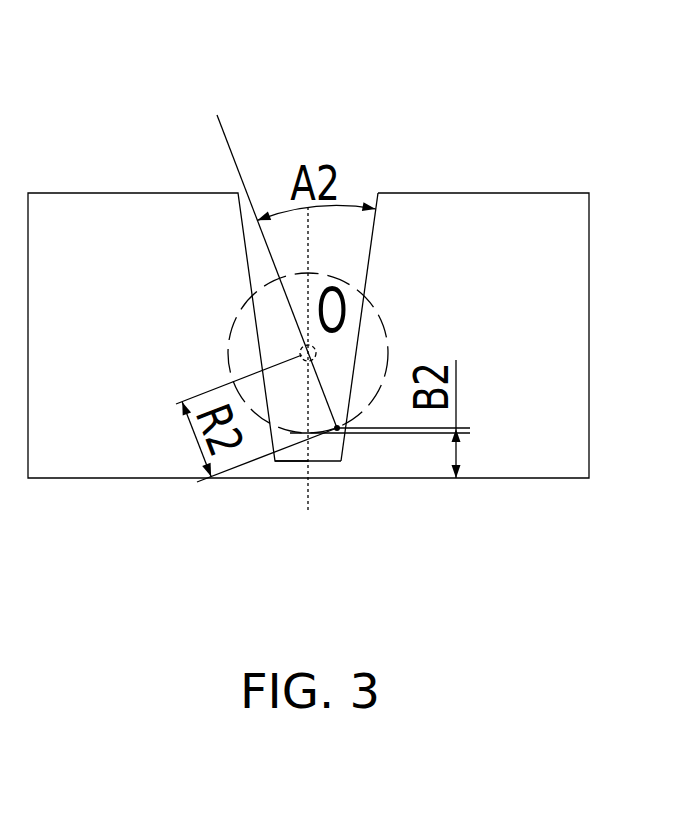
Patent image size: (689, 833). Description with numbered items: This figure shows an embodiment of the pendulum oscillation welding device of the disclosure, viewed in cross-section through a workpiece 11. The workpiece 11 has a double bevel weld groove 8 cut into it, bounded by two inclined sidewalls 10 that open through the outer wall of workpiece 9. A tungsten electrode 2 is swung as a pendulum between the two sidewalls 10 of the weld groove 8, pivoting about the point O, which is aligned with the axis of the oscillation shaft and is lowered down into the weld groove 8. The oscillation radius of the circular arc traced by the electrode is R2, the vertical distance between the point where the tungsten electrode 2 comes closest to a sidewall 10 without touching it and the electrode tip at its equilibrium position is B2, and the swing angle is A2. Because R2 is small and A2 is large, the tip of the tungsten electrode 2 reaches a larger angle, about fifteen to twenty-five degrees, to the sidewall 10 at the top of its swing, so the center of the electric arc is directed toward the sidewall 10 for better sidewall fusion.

The tungsten electrode 2 is at (249, 198).
The double bevel weld groove 8 is at (310, 461).
The outer wall of workpiece 9 is at (458, 193).
The sidewall 10 is at (369, 258).
The workpiece 11 is at (197, 255).